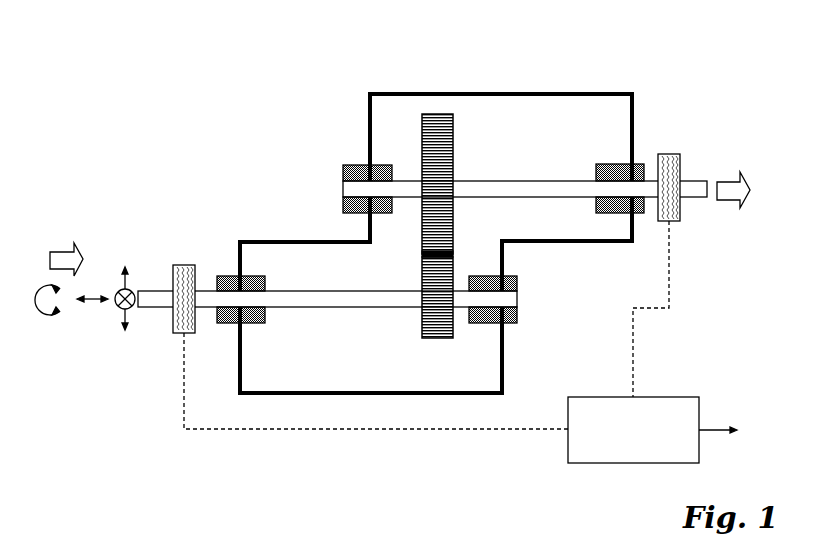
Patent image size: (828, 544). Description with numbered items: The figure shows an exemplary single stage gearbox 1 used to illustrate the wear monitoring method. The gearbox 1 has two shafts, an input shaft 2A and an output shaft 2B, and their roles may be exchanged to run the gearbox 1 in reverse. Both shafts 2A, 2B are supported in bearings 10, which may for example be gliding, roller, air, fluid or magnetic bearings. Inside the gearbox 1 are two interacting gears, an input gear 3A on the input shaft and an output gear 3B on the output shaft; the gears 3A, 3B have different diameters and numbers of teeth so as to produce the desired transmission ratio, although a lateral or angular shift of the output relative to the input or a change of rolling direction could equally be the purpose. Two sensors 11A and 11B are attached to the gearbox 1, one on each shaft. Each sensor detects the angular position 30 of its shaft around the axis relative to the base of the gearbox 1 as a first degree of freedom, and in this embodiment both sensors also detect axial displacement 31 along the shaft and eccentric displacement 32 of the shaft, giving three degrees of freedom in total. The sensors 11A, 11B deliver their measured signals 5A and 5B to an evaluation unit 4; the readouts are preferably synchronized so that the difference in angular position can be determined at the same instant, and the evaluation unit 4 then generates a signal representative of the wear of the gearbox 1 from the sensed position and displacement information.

The gearbox 1 is at (490, 196).
The input shaft 2A is at (298, 252).
The output shaft 2B is at (553, 157).
The input gear 3A is at (367, 379).
The output gear 3B is at (403, 147).
The evaluation unit 4 is at (639, 441).
The measured signal from the first sensor 5A is at (376, 417).
The measured signal from the second sensor 5B is at (691, 309).
The bearings 10 is at (440, 210).
The first sensor 11A is at (142, 247).
The second sensor 11B is at (718, 147).
The angular position 30 is at (84, 405).
The axial displacement 31 is at (115, 391).
The eccentric displacement 32 is at (150, 364).